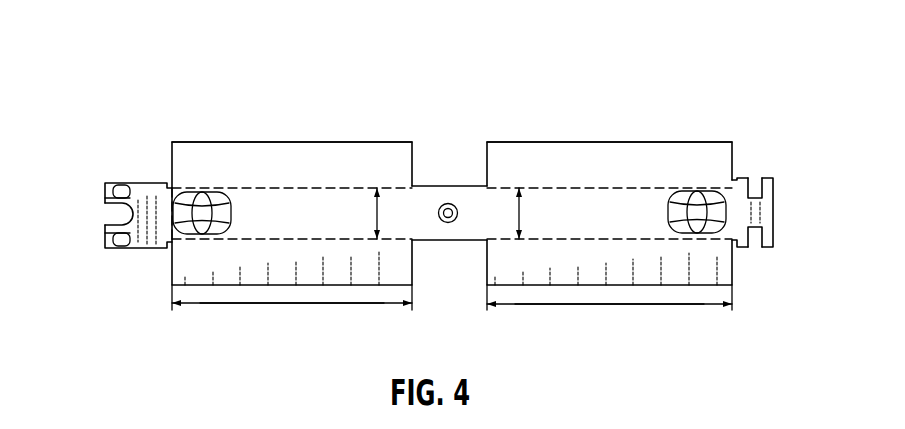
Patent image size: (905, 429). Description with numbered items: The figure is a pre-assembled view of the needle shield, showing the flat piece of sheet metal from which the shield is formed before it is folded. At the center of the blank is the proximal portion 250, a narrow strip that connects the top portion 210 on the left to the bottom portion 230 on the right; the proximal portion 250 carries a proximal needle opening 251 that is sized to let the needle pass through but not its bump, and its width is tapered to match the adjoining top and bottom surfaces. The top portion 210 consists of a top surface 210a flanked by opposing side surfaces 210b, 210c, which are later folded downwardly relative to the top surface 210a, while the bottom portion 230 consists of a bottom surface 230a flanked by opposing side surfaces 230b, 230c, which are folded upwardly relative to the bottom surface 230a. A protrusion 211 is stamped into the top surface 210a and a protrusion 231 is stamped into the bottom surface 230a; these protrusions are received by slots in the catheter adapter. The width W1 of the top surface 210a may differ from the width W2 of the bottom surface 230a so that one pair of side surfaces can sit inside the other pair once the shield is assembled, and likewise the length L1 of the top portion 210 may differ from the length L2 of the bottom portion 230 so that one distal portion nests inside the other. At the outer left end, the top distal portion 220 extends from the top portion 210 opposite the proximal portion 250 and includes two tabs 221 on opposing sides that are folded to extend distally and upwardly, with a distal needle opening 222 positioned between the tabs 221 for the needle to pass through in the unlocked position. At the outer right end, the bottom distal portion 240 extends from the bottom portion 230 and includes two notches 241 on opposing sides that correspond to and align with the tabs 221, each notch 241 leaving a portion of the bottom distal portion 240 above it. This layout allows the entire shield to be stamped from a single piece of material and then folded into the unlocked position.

The top portion 210 is at (302, 83).
The top surface 210a is at (290, 200).
The side surface 210b is at (378, 173).
The side surface 210c is at (278, 273).
The protrusion 211 is at (202, 198).
The top distal portion 220 is at (150, 192).
The tab 221 is at (116, 191).
The distal needle opening 222 is at (111, 213).
The bottom portion 230 is at (559, 74).
The bottom surface 230a is at (575, 190).
The side surface 230b is at (633, 167).
The side surface 230c is at (618, 273).
The protrusion 231 is at (684, 192).
The bottom distal portion 240 is at (775, 213).
The notch 241 is at (756, 178).
The proximal portion 250 is at (420, 229).
The proximal needle opening 251 is at (448, 202).
The width of top surface W1 is at (376, 211).
The width of bottom surface W2 is at (521, 210).
The length of top portion L1 is at (337, 305).
The length of bottom portion L2 is at (518, 305).